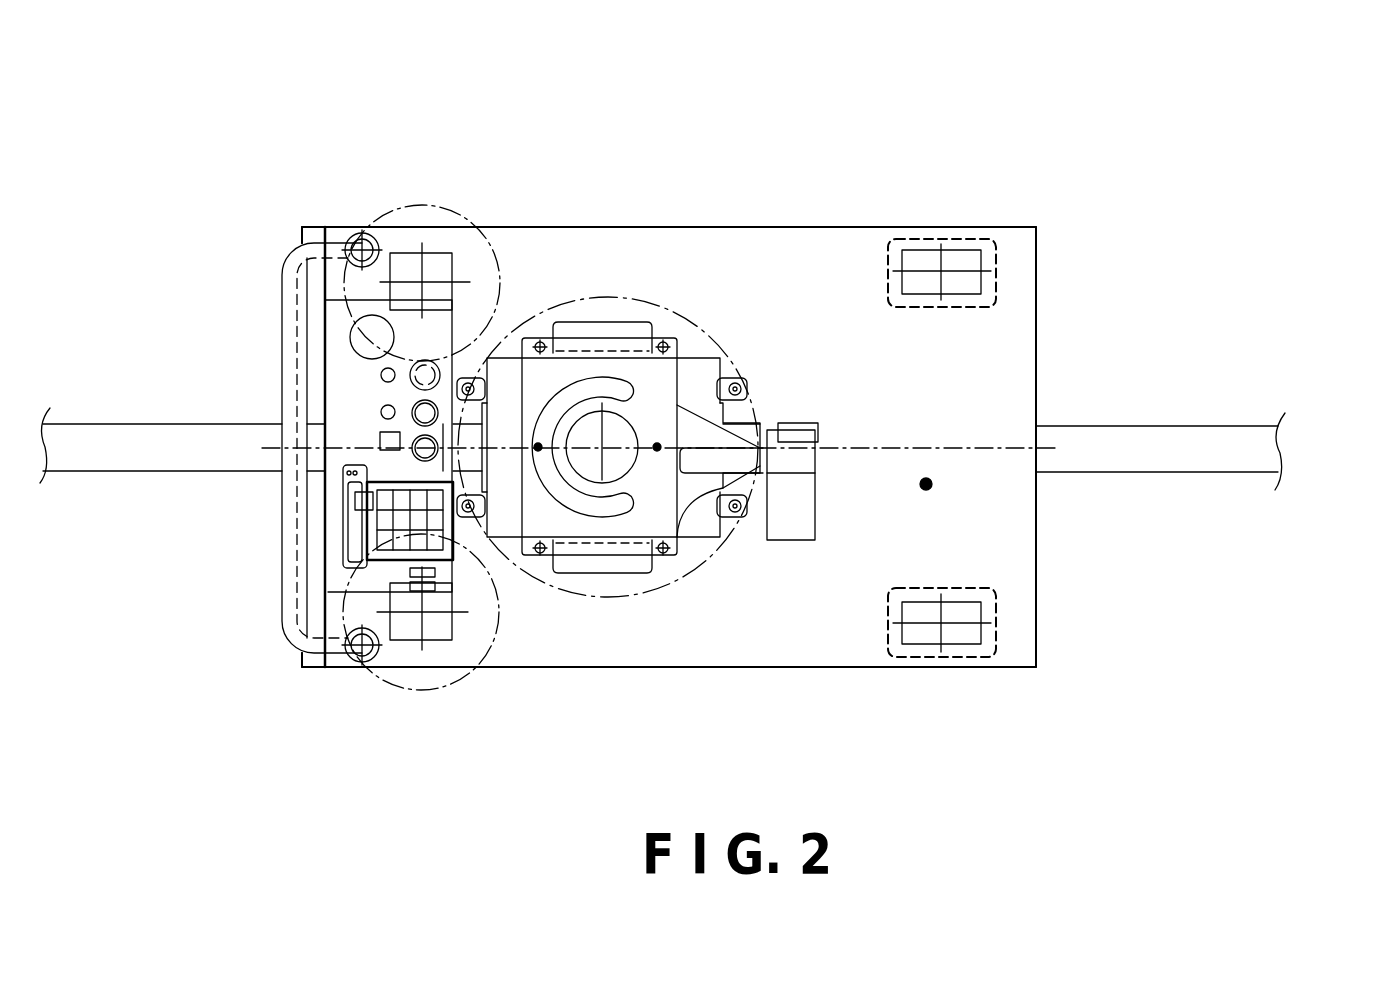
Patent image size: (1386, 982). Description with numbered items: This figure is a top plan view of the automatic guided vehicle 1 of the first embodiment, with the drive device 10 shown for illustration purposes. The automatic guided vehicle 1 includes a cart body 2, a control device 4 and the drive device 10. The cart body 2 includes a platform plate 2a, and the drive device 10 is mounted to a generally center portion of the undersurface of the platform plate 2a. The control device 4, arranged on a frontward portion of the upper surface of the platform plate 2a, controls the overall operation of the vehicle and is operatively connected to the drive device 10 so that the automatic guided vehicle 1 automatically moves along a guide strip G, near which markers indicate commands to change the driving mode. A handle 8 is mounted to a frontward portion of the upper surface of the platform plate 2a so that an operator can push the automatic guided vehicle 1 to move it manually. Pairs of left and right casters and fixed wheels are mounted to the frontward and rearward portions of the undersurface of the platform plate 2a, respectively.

The automatic guided vehicle 1 is at (780, 145).
The cart body 2 is at (1039, 355).
The platform plate 2a is at (926, 484).
The control device 4 is at (347, 320).
The handle 8 is at (283, 378).
The drive device 10 is at (712, 562).
The guide strip G is at (1242, 423).